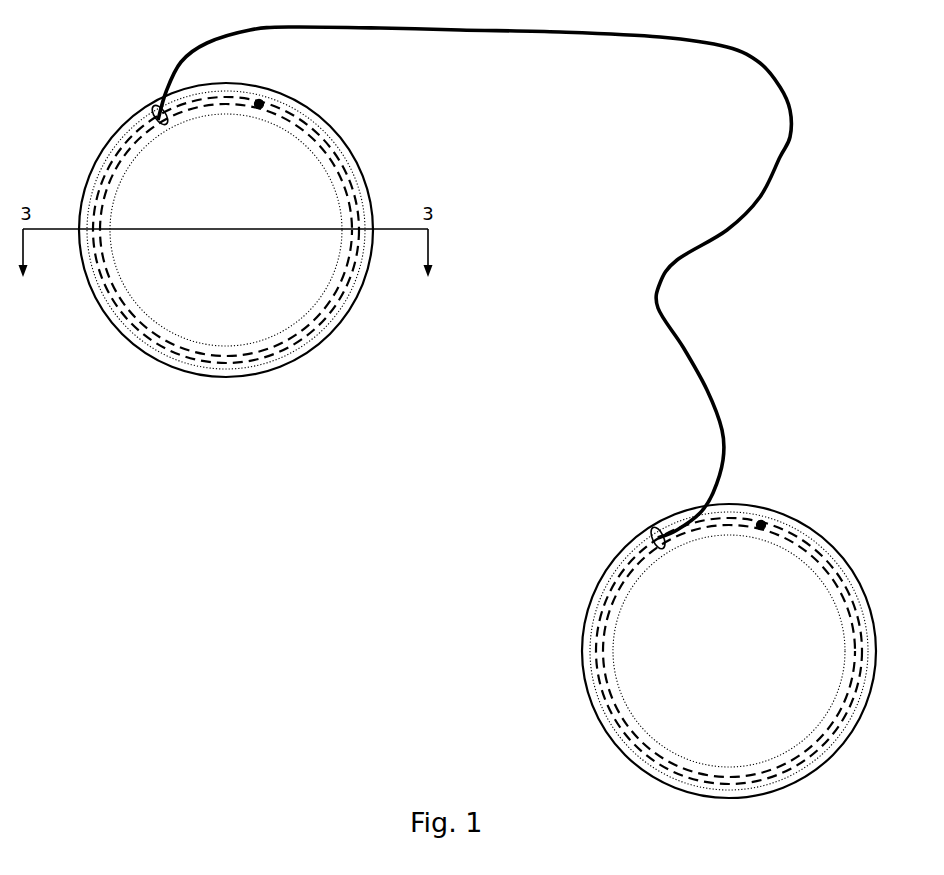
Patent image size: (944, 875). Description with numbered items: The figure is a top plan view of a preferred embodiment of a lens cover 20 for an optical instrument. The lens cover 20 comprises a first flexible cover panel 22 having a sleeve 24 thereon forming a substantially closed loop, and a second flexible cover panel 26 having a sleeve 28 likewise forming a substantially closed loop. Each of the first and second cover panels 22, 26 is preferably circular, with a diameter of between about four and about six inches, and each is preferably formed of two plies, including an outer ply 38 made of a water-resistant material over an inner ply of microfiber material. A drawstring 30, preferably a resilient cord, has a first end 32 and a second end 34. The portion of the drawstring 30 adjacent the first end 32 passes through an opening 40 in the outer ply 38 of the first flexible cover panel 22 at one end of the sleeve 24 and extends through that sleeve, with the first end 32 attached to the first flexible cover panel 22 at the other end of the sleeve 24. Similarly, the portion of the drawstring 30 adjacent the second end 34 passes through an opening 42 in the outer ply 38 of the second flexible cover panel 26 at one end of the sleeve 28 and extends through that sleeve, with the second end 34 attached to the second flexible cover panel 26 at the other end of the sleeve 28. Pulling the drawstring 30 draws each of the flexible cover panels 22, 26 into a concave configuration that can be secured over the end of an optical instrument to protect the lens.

The lens cover 20 is at (446, 495).
The first flexible cover panel 22 is at (195, 373).
The sleeve 24 is at (293, 351).
The second flexible cover panel 26 is at (582, 652).
The sleeve 28 is at (610, 718).
The drawstring 30 is at (780, 157).
The first end 32 is at (267, 103).
The second end 34 is at (763, 520).
The outer ply 38 is at (270, 278).
The opening 40 is at (156, 115).
The opening 42 is at (654, 530).